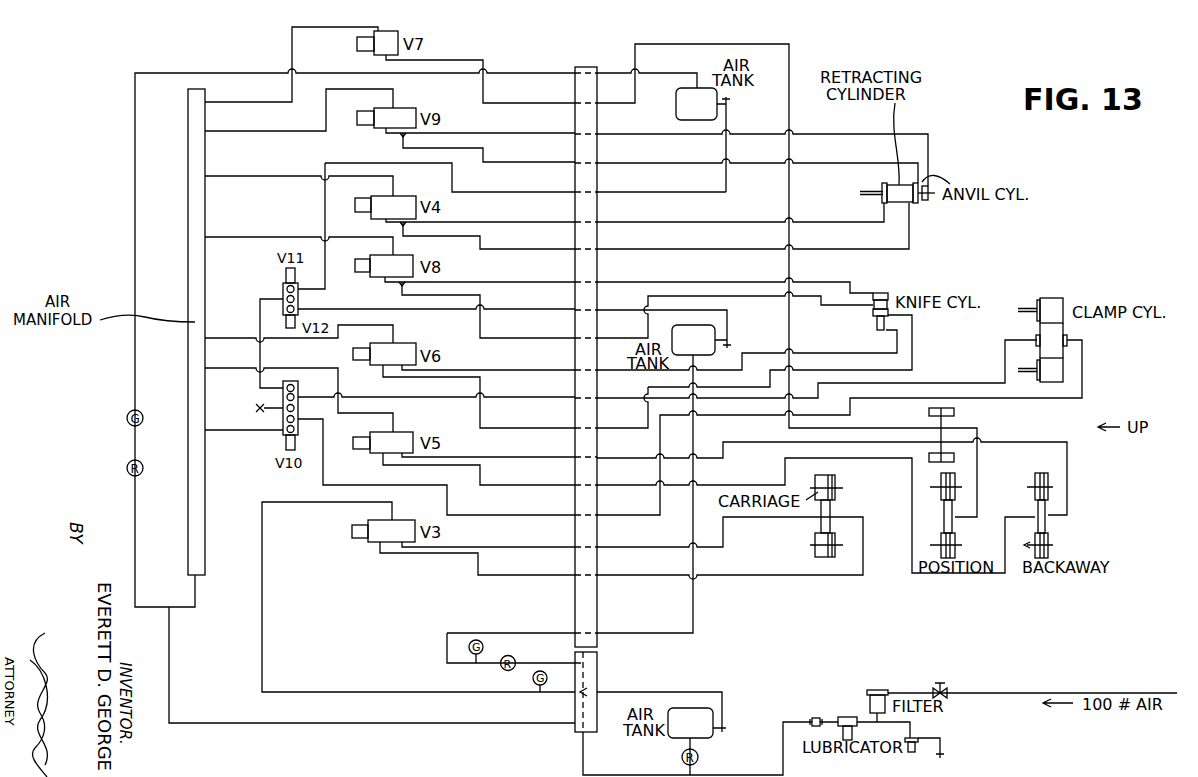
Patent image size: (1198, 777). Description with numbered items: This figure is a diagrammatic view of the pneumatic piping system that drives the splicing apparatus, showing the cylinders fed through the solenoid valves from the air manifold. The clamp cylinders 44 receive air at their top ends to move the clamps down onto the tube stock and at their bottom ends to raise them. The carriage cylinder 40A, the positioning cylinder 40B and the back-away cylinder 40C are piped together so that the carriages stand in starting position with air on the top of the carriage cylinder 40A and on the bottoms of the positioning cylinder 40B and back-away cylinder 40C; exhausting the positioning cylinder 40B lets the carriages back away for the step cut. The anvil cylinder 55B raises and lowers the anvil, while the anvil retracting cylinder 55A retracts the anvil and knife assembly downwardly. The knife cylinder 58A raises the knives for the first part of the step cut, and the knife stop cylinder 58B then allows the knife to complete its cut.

The clamp cylinder 44 is at (1051, 305).
The carriage cylinder 40A is at (823, 478).
The positioning cylinder 40B is at (951, 497).
The back-away cylinder 40C is at (1040, 478).
The anvil retracting cylinder 55A is at (887, 184).
The anvil cylinder 55B is at (917, 204).
The knife cylinder 58A is at (880, 293).
The knife stop cylinder 58B is at (877, 323).